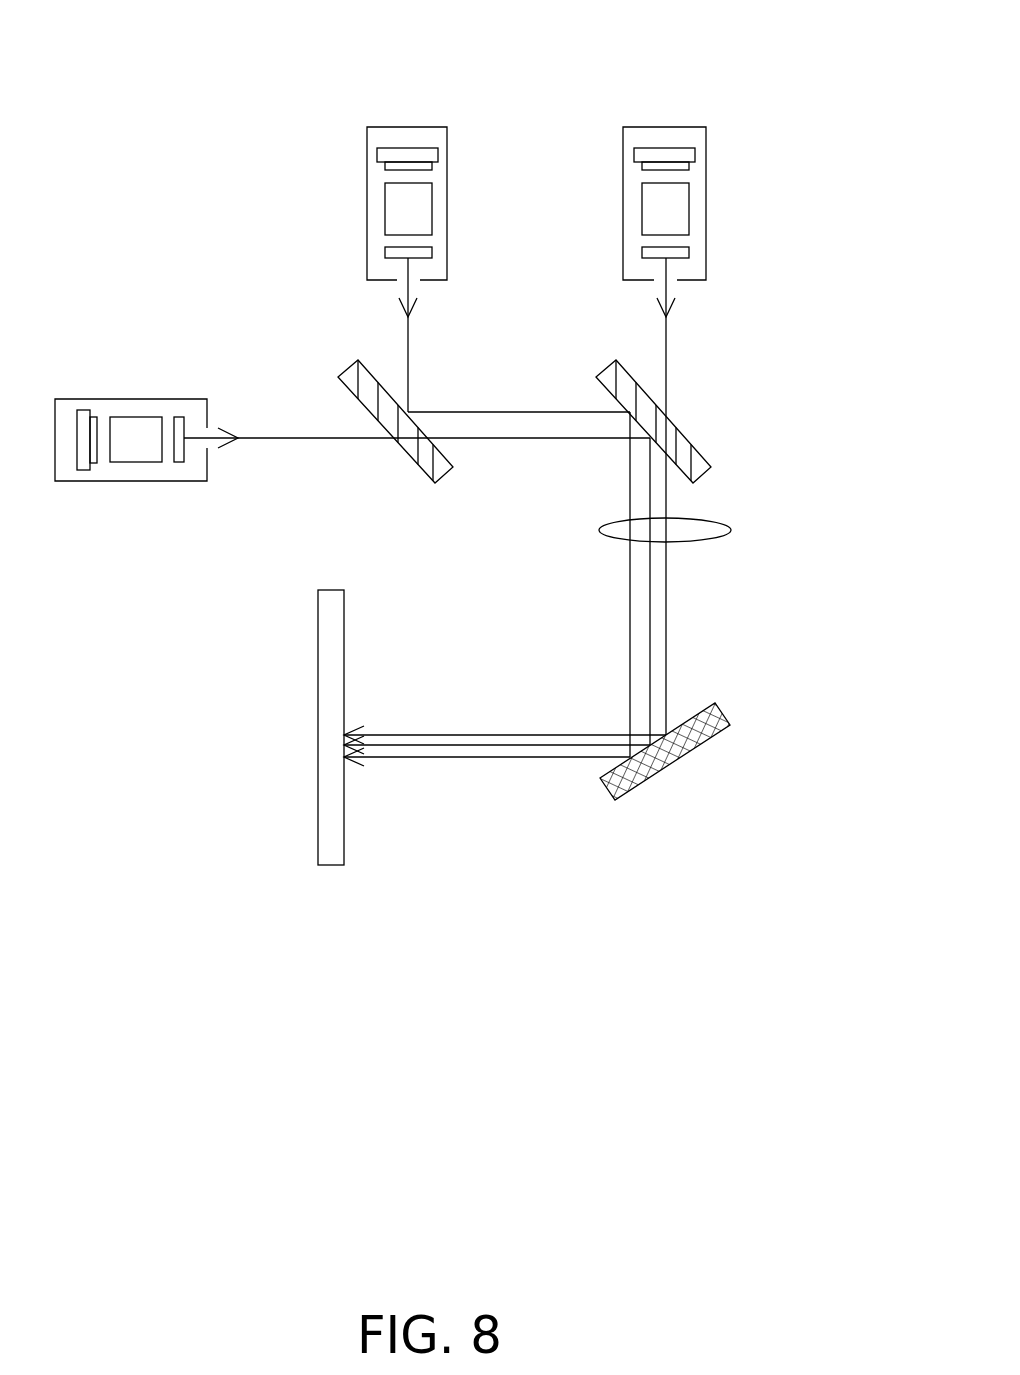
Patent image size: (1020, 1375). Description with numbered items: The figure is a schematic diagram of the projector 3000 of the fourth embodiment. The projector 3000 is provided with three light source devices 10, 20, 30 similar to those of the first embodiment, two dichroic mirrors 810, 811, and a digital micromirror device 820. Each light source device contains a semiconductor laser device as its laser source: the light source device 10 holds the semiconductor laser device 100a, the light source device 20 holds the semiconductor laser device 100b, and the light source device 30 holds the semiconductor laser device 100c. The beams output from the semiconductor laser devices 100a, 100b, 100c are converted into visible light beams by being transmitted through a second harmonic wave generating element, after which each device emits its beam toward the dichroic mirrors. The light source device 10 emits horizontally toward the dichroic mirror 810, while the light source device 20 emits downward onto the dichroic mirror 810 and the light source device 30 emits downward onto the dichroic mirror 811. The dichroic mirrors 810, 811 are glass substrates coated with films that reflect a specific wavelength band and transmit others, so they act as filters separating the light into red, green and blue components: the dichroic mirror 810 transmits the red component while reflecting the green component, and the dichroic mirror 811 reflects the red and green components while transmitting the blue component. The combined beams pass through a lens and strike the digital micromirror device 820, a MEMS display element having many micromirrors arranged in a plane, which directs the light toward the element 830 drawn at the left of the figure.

The projector 3000 is at (132, 44).
The light source device 10 is at (114, 439).
The light source device 20 is at (465, 170).
The light source device 30 is at (721, 170).
The semiconductor laser device 100a is at (79, 400).
The semiconductor laser device 100b is at (438, 150).
The semiconductor laser device 100c is at (695, 150).
The dichroic mirror 810 is at (446, 476).
The dichroic mirror 811 is at (704, 476).
The digital micromirror device 820 is at (722, 712).
The screen 830 is at (331, 865).